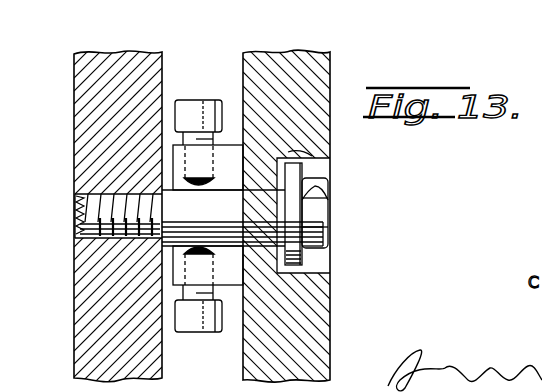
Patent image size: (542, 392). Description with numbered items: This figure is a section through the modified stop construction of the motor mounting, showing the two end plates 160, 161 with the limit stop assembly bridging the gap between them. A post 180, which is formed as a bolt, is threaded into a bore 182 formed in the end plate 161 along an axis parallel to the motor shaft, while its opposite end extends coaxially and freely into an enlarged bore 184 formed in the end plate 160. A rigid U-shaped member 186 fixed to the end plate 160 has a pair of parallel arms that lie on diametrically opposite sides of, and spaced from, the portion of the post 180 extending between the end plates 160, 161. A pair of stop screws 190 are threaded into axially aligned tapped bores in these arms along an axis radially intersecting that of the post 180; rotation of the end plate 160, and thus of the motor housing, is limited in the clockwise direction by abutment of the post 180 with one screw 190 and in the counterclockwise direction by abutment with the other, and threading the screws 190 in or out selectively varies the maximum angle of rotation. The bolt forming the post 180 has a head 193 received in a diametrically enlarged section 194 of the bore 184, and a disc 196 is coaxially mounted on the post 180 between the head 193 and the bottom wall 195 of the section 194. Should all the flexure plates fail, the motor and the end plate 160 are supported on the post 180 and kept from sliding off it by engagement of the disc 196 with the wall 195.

The end plate 160 is at (332, 63).
The end plate 161 is at (162, 68).
The post 180 is at (238, 215).
The bore 182 is at (86, 236).
The enlarged bore 184 is at (312, 161).
The U-shaped member 186 is at (236, 145).
The stop screws 190 is at (184, 100).
The head 193 is at (313, 221).
The enlarged section 194 is at (305, 273).
The bottom wall 195 is at (310, 156).
The disc 196 is at (290, 202).